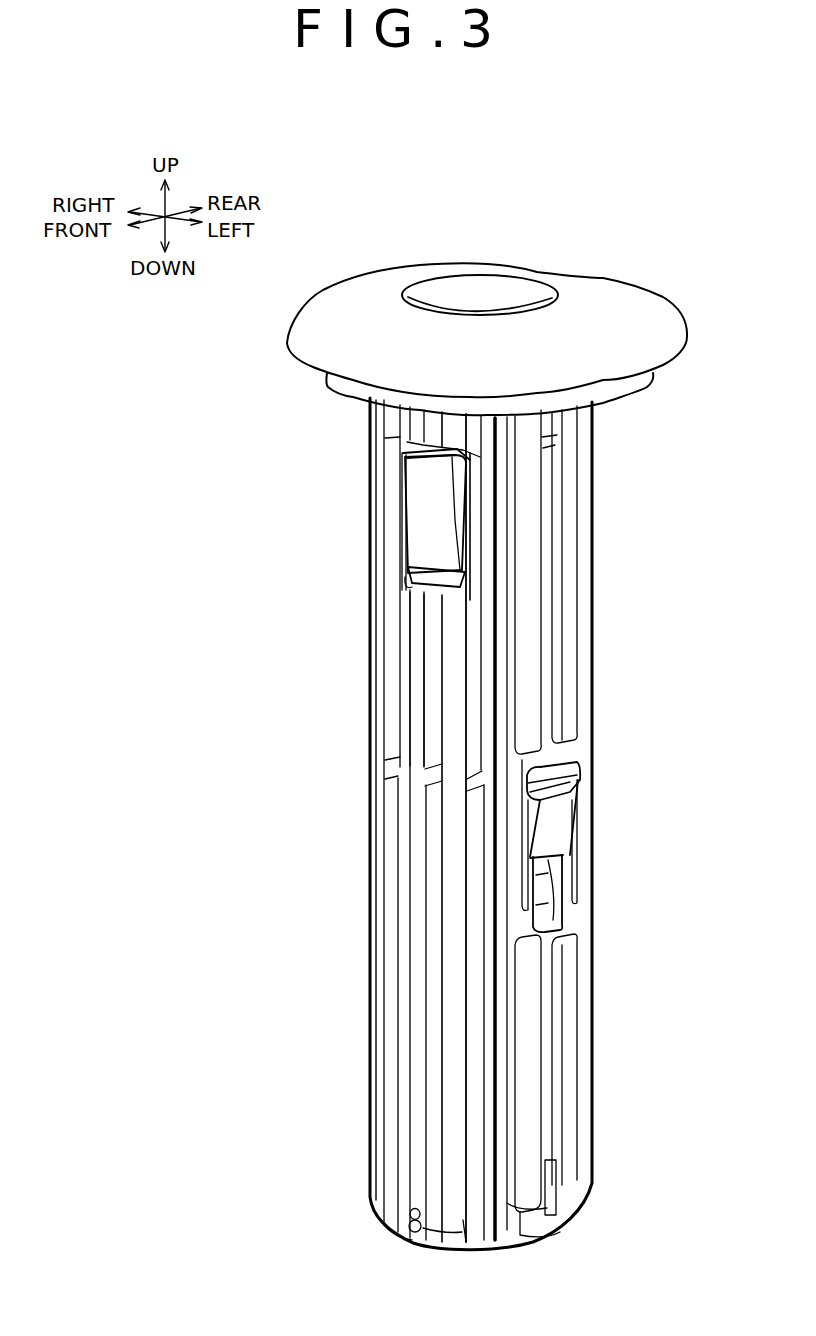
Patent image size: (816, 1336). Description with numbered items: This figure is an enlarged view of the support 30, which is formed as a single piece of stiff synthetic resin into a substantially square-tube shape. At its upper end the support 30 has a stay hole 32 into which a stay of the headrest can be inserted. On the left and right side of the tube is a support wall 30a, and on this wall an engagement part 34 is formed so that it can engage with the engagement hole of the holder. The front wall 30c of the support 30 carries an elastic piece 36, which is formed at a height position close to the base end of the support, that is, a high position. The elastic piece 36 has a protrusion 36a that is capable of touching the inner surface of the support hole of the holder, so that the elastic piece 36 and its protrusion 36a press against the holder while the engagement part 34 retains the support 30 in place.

The support 30 is at (603, 318).
The stay hole 32 is at (490, 290).
The engagement part 34 is at (558, 812).
The elastic piece 36 is at (428, 520).
The protrusion 36a is at (422, 463).
The support wall 30a is at (575, 915).
The front wall 30c is at (417, 618).